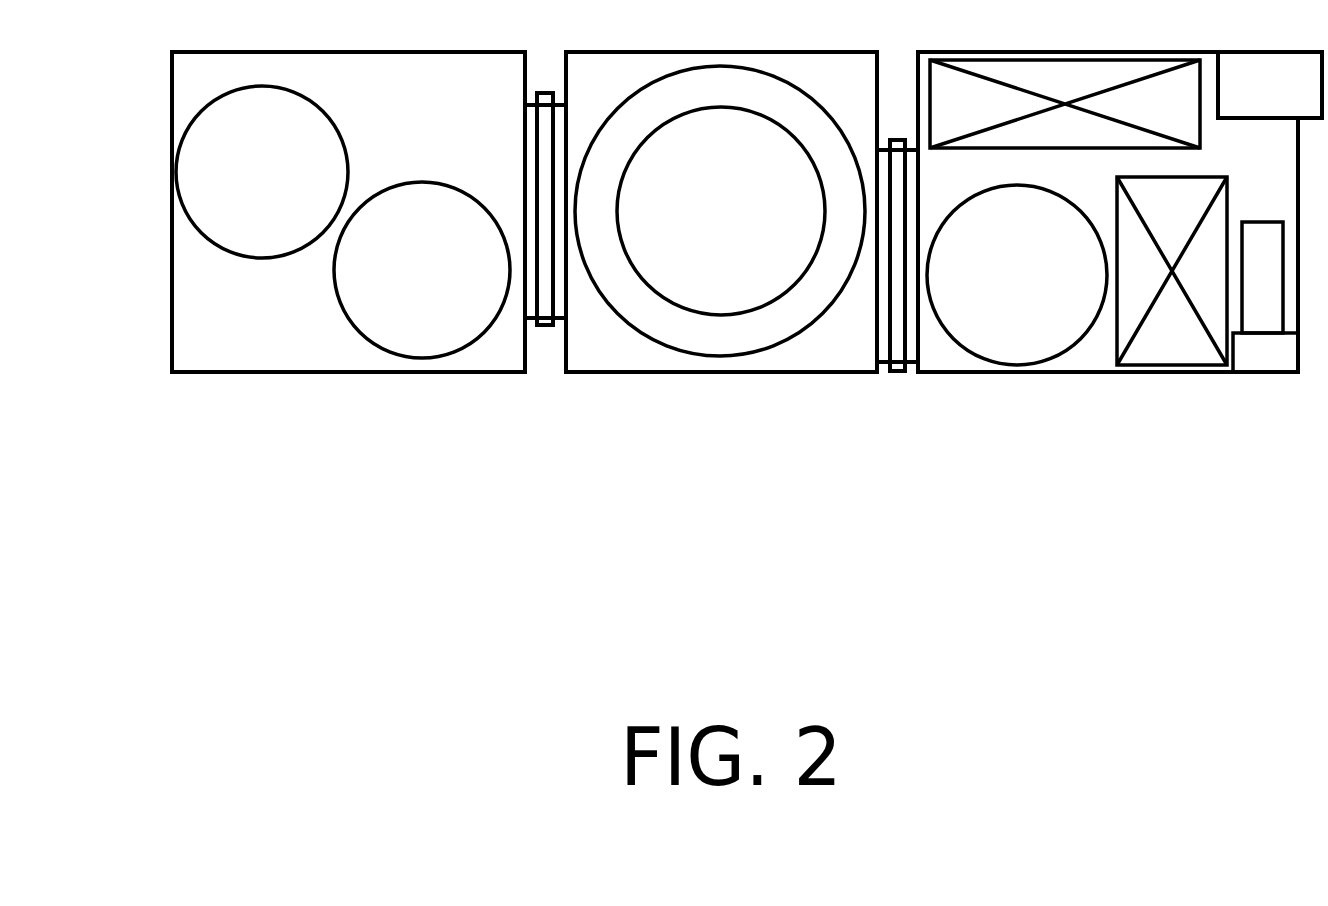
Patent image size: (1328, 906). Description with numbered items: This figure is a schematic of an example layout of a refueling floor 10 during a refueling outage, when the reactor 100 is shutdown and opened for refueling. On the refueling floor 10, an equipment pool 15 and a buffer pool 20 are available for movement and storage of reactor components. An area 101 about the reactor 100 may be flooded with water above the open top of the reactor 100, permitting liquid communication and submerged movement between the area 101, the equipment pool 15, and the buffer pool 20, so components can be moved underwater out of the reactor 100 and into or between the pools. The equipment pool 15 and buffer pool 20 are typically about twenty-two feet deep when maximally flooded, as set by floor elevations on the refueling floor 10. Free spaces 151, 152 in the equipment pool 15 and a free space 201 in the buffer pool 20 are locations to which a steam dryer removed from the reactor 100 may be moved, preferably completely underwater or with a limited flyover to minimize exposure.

The refueling floor 10 is at (730, 306).
The equipment pool 15 is at (467, 373).
The free space 151 is at (242, 223).
The free space 152 is at (400, 297).
The reactor 100 is at (710, 313).
The area about reactor 101 is at (805, 373).
The buffer pool 20 is at (963, 373).
The free space 201 is at (1027, 298).